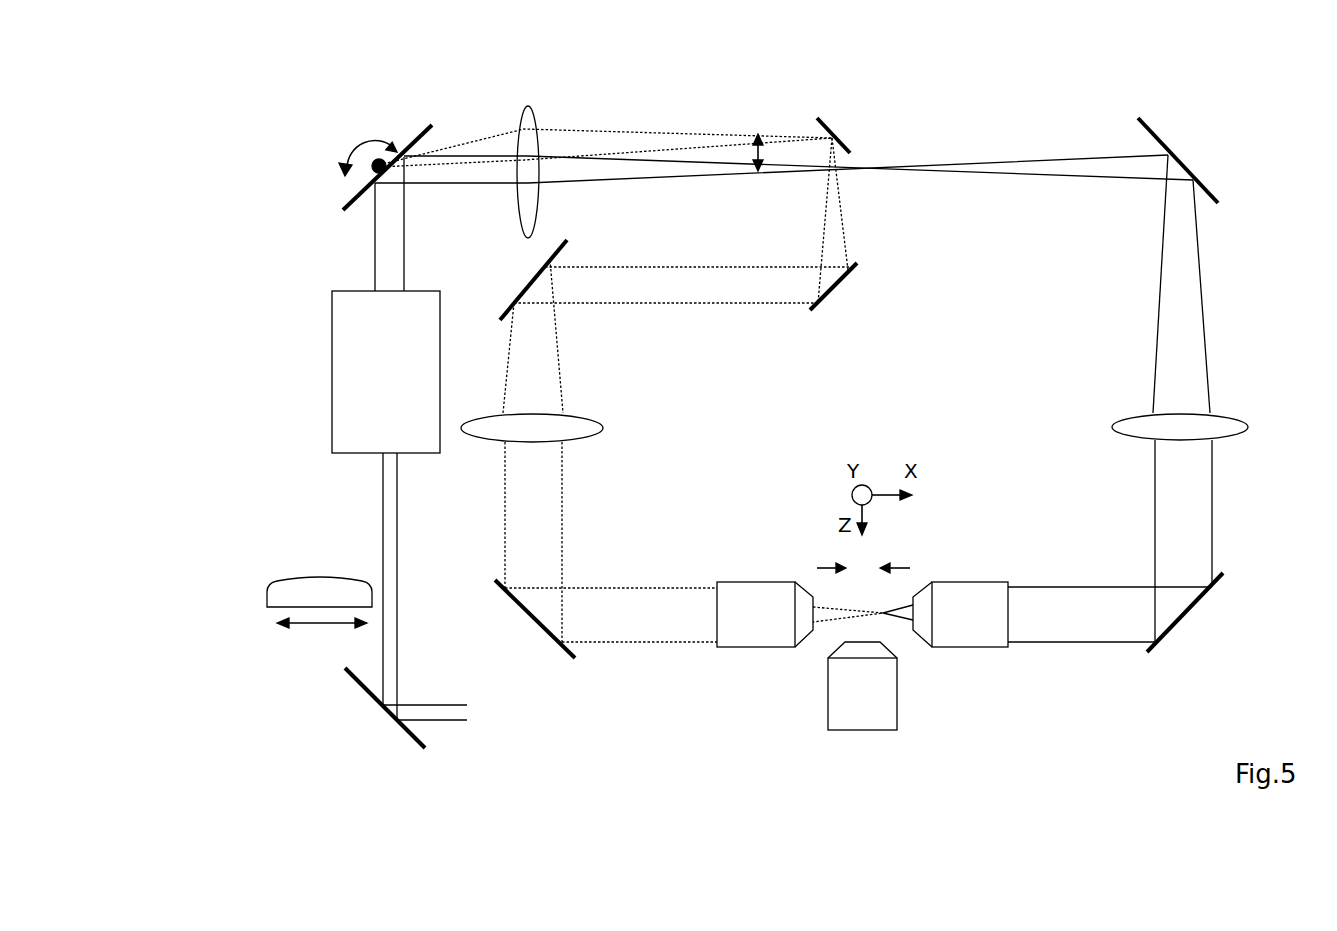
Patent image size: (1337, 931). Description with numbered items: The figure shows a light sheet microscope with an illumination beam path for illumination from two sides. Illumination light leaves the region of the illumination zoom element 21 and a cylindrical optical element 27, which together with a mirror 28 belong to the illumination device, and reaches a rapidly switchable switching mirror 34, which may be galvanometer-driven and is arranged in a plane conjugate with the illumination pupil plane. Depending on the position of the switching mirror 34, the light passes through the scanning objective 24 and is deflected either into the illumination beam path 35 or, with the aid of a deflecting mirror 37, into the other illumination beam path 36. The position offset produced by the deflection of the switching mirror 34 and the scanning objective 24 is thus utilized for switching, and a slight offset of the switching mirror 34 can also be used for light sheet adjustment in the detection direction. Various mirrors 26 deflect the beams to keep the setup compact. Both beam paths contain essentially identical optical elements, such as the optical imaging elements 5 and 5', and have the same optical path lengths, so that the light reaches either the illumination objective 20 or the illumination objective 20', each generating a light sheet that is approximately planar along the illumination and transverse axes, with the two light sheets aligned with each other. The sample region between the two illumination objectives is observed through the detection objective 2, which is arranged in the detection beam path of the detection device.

The detection objective 2 is at (893, 710).
The optical imaging element 5 is at (1136, 423).
The optical imaging element 5' is at (572, 424).
The illumination objective 20 is at (949, 580).
The illumination objective 20' is at (794, 580).
The illumination zoom element 21 is at (338, 420).
The scanning objective 24 is at (530, 128).
The mirrors 26 is at (1157, 132).
The cylindrical optical element 27 is at (290, 578).
The mirror 28 is at (365, 690).
The switching mirror 34 is at (363, 183).
The illumination beam path 35 is at (615, 177).
The other illumination beam path 36 is at (675, 138).
The deflecting mirror 37 is at (827, 125).